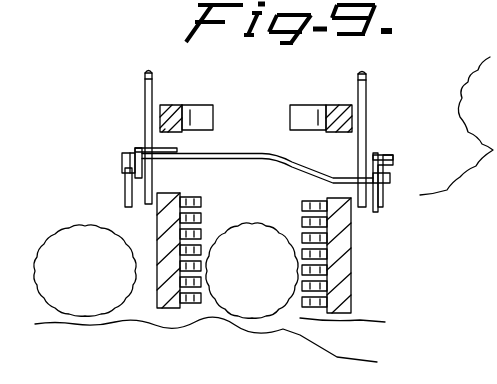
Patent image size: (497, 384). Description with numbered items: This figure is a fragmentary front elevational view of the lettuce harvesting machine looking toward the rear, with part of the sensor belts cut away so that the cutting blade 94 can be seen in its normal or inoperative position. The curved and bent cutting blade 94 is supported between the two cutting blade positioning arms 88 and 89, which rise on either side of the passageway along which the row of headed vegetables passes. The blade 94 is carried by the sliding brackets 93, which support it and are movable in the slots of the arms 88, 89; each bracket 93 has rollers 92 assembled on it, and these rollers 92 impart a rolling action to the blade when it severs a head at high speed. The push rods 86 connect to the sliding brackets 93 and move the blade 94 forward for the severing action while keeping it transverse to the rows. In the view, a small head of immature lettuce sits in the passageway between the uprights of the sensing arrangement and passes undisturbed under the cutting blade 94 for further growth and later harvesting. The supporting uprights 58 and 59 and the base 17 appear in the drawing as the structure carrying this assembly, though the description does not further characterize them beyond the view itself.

The ground support base 17 is at (358, 316).
The right upright support member 58 is at (352, 286).
The left upright support member 59 is at (158, 291).
The push rod 86 is at (124, 189).
The cutting blade positioning arm 88 is at (144, 99).
The cutting blade positioning arm 89 is at (368, 110).
The roller 92 is at (135, 149).
The sliding bracket 93 is at (380, 152).
The cutting blade 94 is at (241, 152).